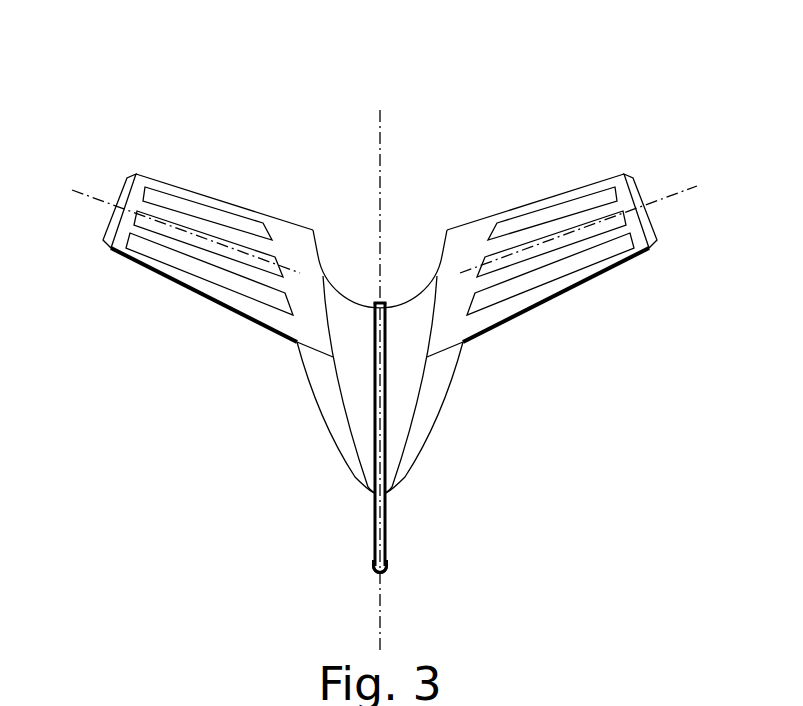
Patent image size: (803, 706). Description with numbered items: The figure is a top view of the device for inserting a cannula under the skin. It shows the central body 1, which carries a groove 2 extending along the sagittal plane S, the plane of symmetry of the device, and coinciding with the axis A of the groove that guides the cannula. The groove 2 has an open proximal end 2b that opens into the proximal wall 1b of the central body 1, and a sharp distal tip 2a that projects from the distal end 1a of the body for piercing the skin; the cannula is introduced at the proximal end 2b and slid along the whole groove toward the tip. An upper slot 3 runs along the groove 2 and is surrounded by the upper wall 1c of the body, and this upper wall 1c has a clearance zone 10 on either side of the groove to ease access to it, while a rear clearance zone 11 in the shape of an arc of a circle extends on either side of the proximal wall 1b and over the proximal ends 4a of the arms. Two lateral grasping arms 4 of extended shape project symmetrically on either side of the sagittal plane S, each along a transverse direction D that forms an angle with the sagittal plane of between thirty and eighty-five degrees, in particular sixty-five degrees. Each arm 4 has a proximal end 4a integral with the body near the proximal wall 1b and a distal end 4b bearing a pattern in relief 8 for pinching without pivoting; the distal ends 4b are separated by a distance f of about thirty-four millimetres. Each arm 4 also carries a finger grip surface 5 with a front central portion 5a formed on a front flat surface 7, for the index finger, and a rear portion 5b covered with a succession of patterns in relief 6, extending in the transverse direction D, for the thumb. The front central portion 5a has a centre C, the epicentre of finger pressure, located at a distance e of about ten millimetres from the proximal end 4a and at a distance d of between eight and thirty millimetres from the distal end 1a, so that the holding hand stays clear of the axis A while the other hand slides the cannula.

The central body 1 is at (348, 384).
The distal end 1a is at (372, 495).
The proximal wall 1b is at (340, 288).
The upper wall 1c is at (352, 408).
The groove 2 is at (317, 595).
The sharp distal tip 2a is at (380, 575).
The open proximal end 2b is at (383, 298).
The upper slot 3 is at (387, 517).
The lateral grasping arm 4 is at (540, 220).
The proximal end 4a is at (318, 315).
The distal end 4b is at (593, 162).
The finger grip surface 5 is at (540, 220).
The front central portion 5a is at (581, 302).
The rear portion 5b is at (497, 230).
The patterns in relief 6 is at (155, 252).
The front flat surface 7 is at (617, 262).
The pattern in relief 8 is at (625, 173).
The clearance zone 10 is at (360, 374).
The rear clearance zone 11 is at (383, 228).
The distance between distal ends f is at (103, 235).
The transverse direction D is at (381, 221).
The sagittal plane S is at (442, 380).
The axis of the groove A is at (380, 613).
The centre C is at (562, 310).
The distance d is at (390, 493).
The distance e is at (578, 280).